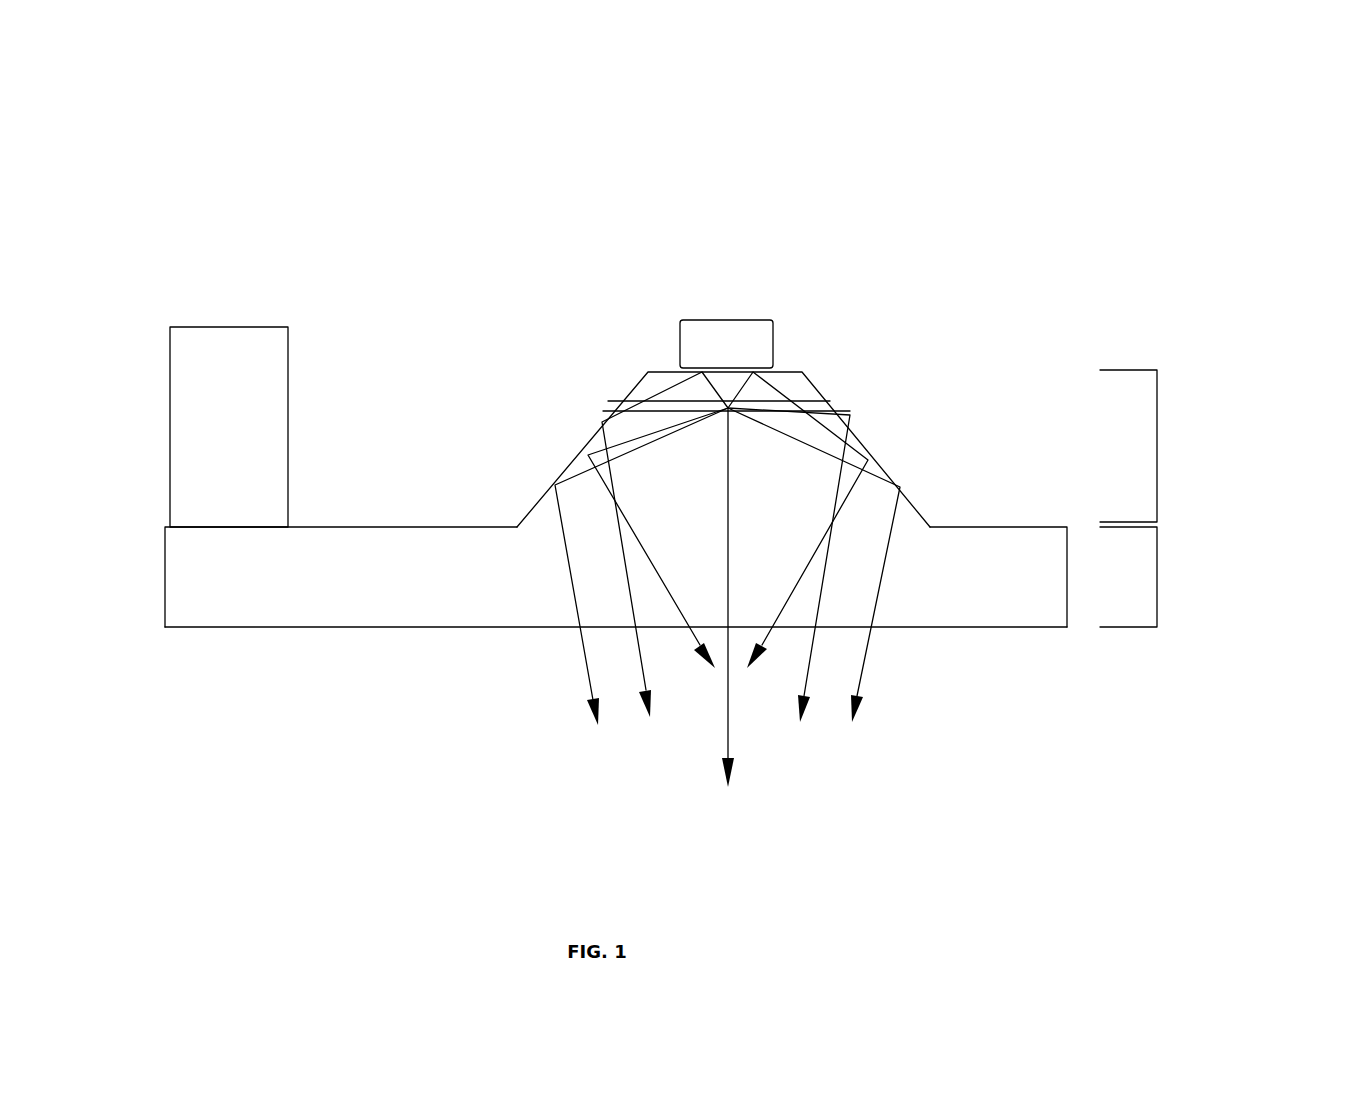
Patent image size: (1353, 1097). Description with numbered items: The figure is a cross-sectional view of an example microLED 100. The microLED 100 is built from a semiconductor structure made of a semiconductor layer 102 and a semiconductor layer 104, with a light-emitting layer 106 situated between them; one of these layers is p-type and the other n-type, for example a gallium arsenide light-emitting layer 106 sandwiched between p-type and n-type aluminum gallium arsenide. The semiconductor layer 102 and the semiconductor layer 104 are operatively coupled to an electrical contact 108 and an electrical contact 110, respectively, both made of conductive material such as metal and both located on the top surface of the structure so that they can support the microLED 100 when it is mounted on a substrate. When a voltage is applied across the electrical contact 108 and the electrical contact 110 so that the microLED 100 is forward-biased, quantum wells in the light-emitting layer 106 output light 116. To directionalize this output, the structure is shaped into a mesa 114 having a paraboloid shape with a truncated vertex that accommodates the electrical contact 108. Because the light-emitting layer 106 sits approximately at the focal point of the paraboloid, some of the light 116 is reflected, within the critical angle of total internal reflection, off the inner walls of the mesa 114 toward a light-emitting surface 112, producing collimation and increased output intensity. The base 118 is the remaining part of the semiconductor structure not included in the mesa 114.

The microLED 100 is at (492, 96).
The semiconductor layer 102 is at (716, 368).
The semiconductor layer 104 is at (363, 565).
The light-emitting layer 106 is at (608, 402).
The electrical contact 108 is at (762, 338).
The electrical contact 110 is at (228, 326).
The light-emitting surface 112 is at (1038, 627).
The mesa 114 is at (1157, 439).
The light 116 is at (628, 595).
The base 118 is at (1157, 577).